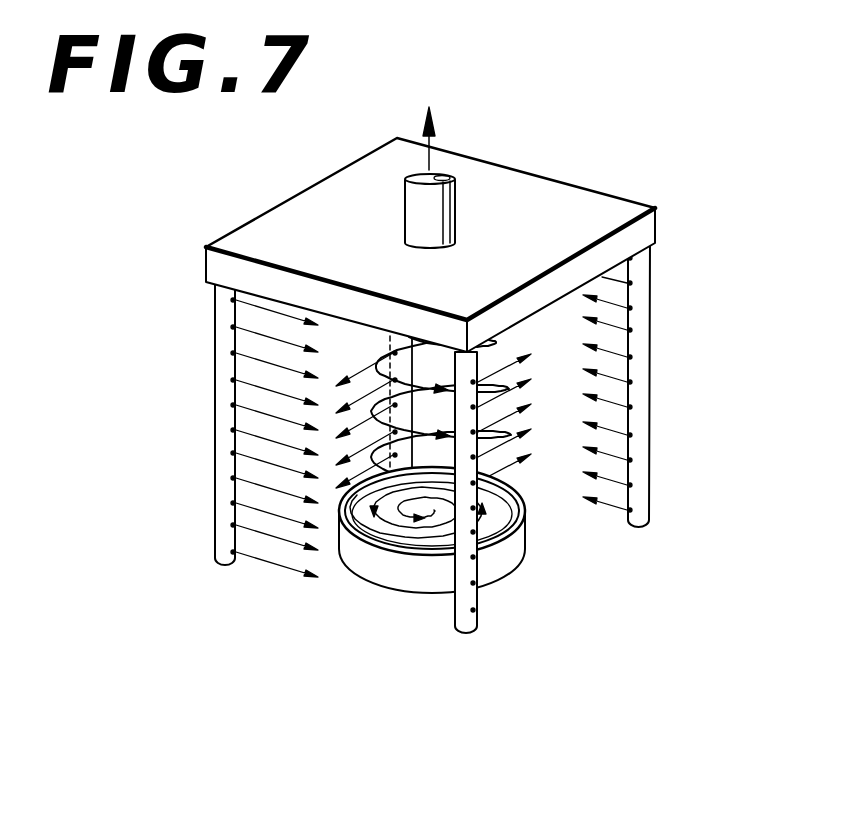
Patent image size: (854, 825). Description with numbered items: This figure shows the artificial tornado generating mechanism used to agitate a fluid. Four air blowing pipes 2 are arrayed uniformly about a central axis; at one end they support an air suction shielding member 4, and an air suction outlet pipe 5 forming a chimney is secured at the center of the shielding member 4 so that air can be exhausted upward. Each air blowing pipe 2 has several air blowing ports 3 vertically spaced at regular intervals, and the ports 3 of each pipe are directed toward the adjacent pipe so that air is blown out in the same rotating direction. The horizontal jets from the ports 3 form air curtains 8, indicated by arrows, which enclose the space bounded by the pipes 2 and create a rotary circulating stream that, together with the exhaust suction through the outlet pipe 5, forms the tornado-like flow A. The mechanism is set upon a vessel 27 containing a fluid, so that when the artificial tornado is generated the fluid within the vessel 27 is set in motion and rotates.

The air blowing pipe 2 is at (645, 324).
The air blowing port 3 is at (634, 386).
The air suction shielding member 4 is at (575, 210).
The air suction outlet pipe 5 is at (458, 200).
The air curtain 8 is at (612, 500).
The vessel 27 is at (393, 563).
The air vortex A is at (503, 457).